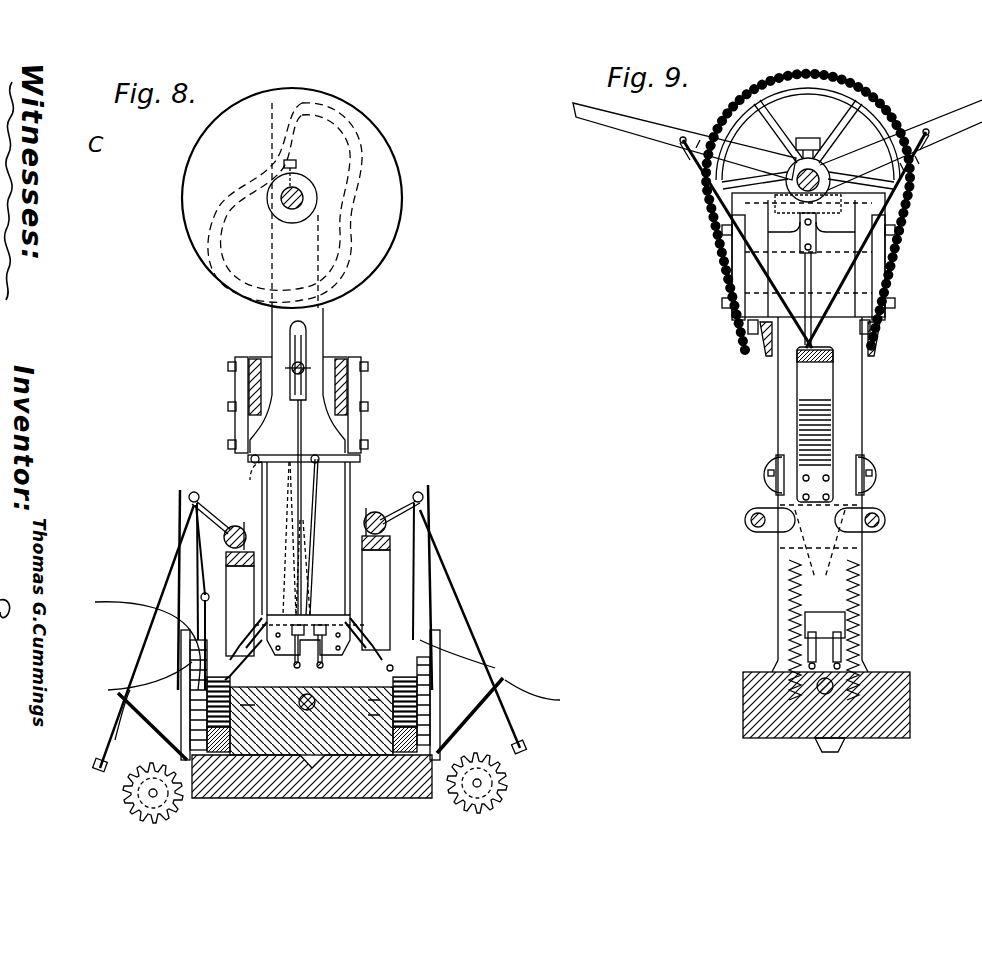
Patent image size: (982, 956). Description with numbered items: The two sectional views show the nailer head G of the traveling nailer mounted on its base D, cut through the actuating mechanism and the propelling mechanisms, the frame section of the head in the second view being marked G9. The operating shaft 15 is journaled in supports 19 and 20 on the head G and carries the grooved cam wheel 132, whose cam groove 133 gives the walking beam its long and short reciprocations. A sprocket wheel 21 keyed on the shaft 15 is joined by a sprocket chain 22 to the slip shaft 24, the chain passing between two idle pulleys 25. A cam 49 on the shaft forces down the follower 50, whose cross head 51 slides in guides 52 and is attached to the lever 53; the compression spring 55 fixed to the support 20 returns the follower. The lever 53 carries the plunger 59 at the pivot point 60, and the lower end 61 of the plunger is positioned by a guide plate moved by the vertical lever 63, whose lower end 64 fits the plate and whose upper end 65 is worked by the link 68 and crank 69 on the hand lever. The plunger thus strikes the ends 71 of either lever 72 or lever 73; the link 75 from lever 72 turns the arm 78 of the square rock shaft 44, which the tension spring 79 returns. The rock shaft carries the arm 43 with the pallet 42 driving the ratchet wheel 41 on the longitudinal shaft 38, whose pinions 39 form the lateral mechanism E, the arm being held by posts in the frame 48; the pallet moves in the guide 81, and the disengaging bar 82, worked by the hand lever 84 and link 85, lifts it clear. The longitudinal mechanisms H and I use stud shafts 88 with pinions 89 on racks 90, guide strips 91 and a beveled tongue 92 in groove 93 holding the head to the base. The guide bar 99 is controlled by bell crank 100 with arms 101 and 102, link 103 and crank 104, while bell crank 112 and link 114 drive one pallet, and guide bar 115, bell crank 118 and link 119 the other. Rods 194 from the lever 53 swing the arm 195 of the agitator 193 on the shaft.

In FIG. 8, the operating shaft 15 is at (298, 192).
In FIG. 9, the operating shaft 15 is at (816, 174).
In FIG. 8, the support 19 is at (307, 538).
In FIG. 9, the support 20 is at (845, 440).
In FIG. 9, the sprocket wheel 21 is at (762, 84).
In FIG. 9, the sprocket chain 22 is at (900, 235).
In FIG. 9, the slip shaft 24 is at (832, 682).
In FIG. 9, the idle pulleys 25 is at (766, 480).
In FIG. 8, the longitudinal shaft 38 is at (150, 770).
In FIG. 8, the pinion 39 is at (128, 780).
In FIG. 8, the ratchet wheel 41 is at (125, 800).
In FIG. 8, the pallet 42 is at (112, 748).
In FIG. 8, the arm 43 is at (193, 492).
In FIG. 8, the rock shaft 44 is at (236, 526).
In FIG. 9, the rock shaft 44 is at (756, 518).
In FIG. 8, the frame 48 is at (226, 578).
In FIG. 9, the cam 49 is at (772, 147).
In FIG. 9, the follower 50 is at (860, 210).
In FIG. 9, the cross head 51 is at (735, 228).
In FIG. 9, the guides 52 is at (738, 270).
In FIG. 8, the lever 53 is at (300, 323).
In FIG. 9, the lever 53 is at (806, 362).
In FIG. 9, the compression spring 55 is at (805, 395).
In FIG. 8, the plunger 59 is at (302, 440).
In FIG. 8, the pivot point 60 is at (302, 364).
In FIG. 8, the lower end of plunger 61 is at (280, 570).
In FIG. 8, the vertical lever 63 is at (312, 490).
In FIG. 8, the lower end of vertical lever 64 is at (279, 580).
In FIG. 8, the upper end of vertical lever 65 is at (319, 460).
In FIG. 8, the link 68 is at (275, 455).
In FIG. 8, the crank 69 is at (251, 459).
In FIG. 8, the lever ends 71 is at (304, 580).
In FIG. 9, the lever ends 71 is at (812, 672).
In FIG. 8, the lever 72 is at (293, 652).
In FIG. 9, the lever 72 is at (805, 636).
In FIG. 8, the lever 73 is at (322, 655).
In FIG. 9, the lever 73 is at (845, 640).
In FIG. 9, the link 75 is at (815, 620).
In FIG. 9, the arm 78 is at (820, 541).
In FIG. 9, the tension spring 79 is at (785, 596).
In FIG. 8, the guide 81 is at (118, 712).
In FIG. 8, the disengaging bar 82 is at (165, 725).
In FIG. 8, the hand lever 84 is at (176, 502).
In FIG. 8, the link 85 is at (140, 688).
In FIG. 8, the stud shafts 88 is at (306, 637).
In FIG. 8, the pinion 89 is at (512, 655).
In FIG. 8, the rack 90 is at (205, 760).
In FIG. 8, the guide strips 91 is at (240, 765).
In FIG. 8, the beveled tongue 92 is at (290, 770).
In FIG. 9, the beveled tongue 92 is at (833, 750).
In FIG. 8, the groove 93 is at (320, 760).
In FIG. 8, the guide bar 99 is at (190, 696).
In FIG. 8, the bell crank 100 is at (190, 665).
In FIG. 8, the arm 101 is at (182, 634).
In FIG. 8, the arm 102 is at (455, 570).
In FIG. 8, the link 103 is at (324, 596).
In FIG. 8, the crank 104 is at (331, 606).
In FIG. 8, the bell crank 112 is at (200, 600).
In FIG. 8, the link 114 is at (195, 538).
In FIG. 8, the guide bar 115 is at (418, 630).
In FIG. 8, the bell crank 118 is at (405, 615).
In FIG. 8, the link 119 is at (416, 540).
In FIG. 8, the cam wheel 132 is at (386, 212).
In FIG. 8, the cam groove 133 is at (356, 178).
In FIG. 9, the agitator 193 is at (777, 145).
In FIG. 9, the rods 194 is at (880, 268).
In FIG. 9, the arm 195 is at (585, 112).
In FIG. 8, the head G is at (362, 385).
In FIG. 9, the frame G9 is at (912, 716).
In FIG. 8, the backward propelling mechanism H is at (135, 641).
In FIG. 8, the lateral propelling mechanism E is at (118, 692).
In FIG. 8, the forward propelling mechanism I is at (520, 707).
In FIG. 8, the base D is at (490, 785).